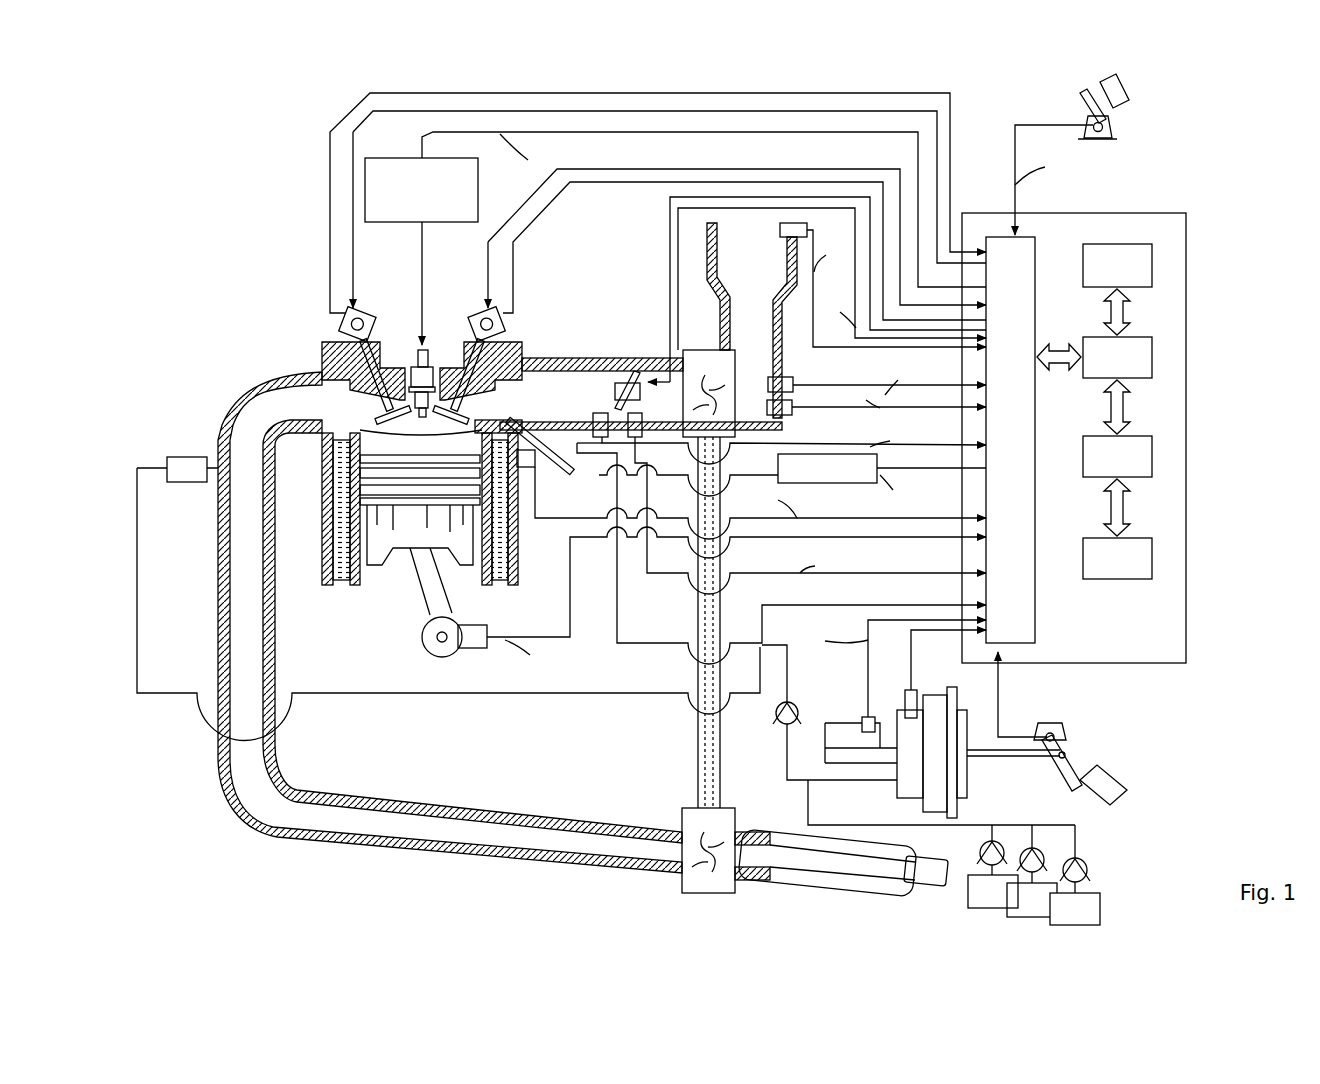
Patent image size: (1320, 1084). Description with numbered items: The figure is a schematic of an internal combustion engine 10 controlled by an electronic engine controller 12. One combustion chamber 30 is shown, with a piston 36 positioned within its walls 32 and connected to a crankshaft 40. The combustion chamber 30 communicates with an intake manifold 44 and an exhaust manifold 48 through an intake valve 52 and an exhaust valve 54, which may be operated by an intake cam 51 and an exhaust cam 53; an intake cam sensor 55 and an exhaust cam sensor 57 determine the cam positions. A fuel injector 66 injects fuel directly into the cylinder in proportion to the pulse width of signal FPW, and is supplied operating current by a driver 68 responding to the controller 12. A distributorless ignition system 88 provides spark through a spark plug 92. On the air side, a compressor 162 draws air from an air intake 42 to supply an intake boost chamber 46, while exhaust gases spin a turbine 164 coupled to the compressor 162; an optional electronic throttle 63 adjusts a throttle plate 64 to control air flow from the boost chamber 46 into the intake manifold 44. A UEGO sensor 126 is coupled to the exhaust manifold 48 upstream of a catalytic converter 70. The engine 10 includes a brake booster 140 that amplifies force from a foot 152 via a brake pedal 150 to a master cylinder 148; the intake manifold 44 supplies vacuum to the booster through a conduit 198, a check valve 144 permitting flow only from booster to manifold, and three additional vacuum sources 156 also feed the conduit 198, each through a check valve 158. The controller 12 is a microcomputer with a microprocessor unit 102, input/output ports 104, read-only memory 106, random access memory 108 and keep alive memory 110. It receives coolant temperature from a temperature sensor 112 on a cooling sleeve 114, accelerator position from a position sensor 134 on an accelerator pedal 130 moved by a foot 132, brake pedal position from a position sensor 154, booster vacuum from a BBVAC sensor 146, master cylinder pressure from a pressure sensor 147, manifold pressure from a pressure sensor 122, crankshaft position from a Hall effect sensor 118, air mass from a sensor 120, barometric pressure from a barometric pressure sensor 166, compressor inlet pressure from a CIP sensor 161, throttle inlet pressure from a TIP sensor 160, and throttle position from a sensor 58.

The internal combustion engine 10 is at (258, 296).
The electronic engine controller 12 is at (1182, 216).
The combustion chamber 30 is at (418, 440).
The walls 32 is at (362, 588).
The piston 36 is at (405, 545).
The crankshaft 40 is at (428, 652).
The air intake 42 is at (738, 276).
The intake manifold 44 is at (537, 404).
The intake boost chamber 46 is at (650, 414).
The exhaust manifold 48 is at (280, 411).
The intake cam 51 is at (480, 310).
The intake valve 52 is at (475, 419).
The exhaust cam 53 is at (360, 316).
The exhaust valve 54 is at (365, 398).
The intake cam sensor 55 is at (507, 332).
The exhaust cam sensor 57 is at (342, 320).
The throttle position sensor 58 is at (650, 380).
The electronic throttle 63 is at (605, 358).
The throttle plate 64 is at (634, 370).
The fuel injector 66 is at (642, 456).
The driver 68 is at (866, 484).
The catalytic converter 70 is at (782, 893).
The distributorless ignition system 88 is at (378, 158).
The spark plug 92 is at (430, 350).
The microprocessor unit 102 is at (1152, 357).
The input/output ports 104 is at (1040, 243).
The read-only memory 106 is at (1152, 265).
The random access memory 108 is at (1152, 456).
The keep alive memory 110 is at (1152, 558).
The temperature sensor 112 is at (525, 470).
The cooling sleeve 114 is at (514, 555).
The Hall effect sensor 118 is at (474, 648).
The air mass sensor 120 is at (793, 383).
The pressure sensor 122 is at (598, 413).
The Universal Exhaust Gas Oxygen (UEGO) sensor 126 is at (167, 460).
The accelerator pedal 130 is at (1082, 104).
The foot 132 is at (1128, 92).
The position sensor 134 is at (1110, 132).
The brake booster 140 is at (897, 800).
The check valve 144 is at (777, 724).
The brake booster vacuum (BBVAC) sensor 146 is at (917, 692).
The pressure sensor 147 is at (870, 716).
The master cylinder 148 is at (830, 723).
The brake pedal 150 is at (1072, 791).
The foot 152 is at (1106, 768).
The position sensor 154 is at (1044, 734).
The additional vacuum sources 156 is at (1060, 921).
The check valve 158 is at (1086, 862).
The TIP sensor 160 is at (642, 440).
The CIP sensor 161 is at (792, 412).
The compressor 162 is at (710, 350).
The turbine 164 is at (690, 808).
The barometric pressure sensor 166 is at (780, 229).
The conduit 198 is at (616, 632).